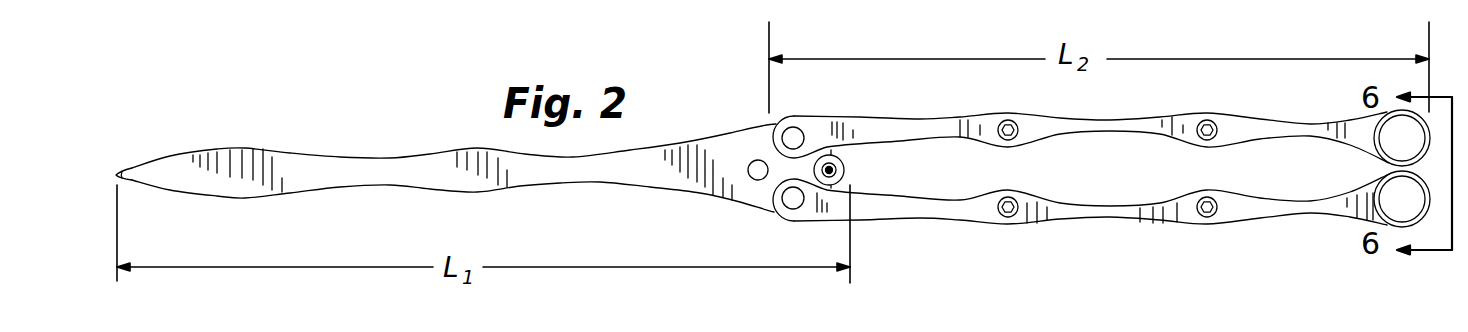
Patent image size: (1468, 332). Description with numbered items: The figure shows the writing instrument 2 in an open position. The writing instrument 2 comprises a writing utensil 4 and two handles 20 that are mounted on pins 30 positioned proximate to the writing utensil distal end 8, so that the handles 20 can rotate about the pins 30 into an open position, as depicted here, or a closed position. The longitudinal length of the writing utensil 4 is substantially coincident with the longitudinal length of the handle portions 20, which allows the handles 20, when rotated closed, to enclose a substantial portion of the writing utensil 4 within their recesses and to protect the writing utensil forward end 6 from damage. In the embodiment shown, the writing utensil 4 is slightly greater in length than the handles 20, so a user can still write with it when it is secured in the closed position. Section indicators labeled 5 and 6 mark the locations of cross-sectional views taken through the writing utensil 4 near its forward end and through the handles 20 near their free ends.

The writing instrument 2 is at (362, 110).
The writing utensil 4 is at (462, 178).
The section line 5 is at (98, 242).
The writing utensil forward end 6 is at (127, 167).
The writing utensil distal end 8 is at (805, 170).
The handle 20 is at (953, 130).
The pin 30 is at (794, 136).